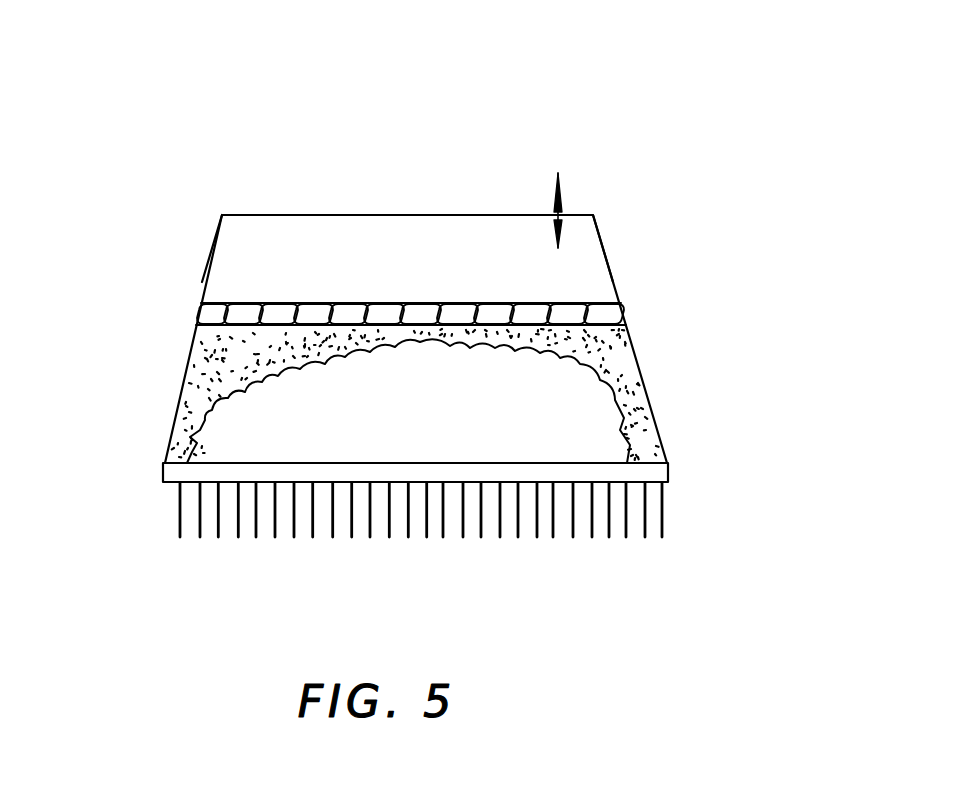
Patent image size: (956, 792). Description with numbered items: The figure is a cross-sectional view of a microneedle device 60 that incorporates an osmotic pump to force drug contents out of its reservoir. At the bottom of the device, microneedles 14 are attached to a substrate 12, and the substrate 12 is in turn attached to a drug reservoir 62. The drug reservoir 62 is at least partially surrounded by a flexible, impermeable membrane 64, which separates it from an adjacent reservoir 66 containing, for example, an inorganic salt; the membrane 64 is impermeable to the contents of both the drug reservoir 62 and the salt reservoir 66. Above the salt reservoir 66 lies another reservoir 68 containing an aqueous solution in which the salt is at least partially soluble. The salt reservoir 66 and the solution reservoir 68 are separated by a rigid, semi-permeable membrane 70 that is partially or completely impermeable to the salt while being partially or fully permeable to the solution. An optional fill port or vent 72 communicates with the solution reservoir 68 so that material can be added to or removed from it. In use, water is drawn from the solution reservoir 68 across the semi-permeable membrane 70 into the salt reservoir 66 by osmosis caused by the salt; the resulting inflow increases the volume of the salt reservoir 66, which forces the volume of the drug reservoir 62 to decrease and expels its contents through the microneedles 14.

The substrate 12 is at (178, 478).
The microneedles 14 is at (667, 512).
The microneedle device 60 is at (402, 121).
The drug reservoir 62 is at (572, 427).
The flexible impermeable membrane 64 is at (193, 437).
The salt reservoir 66 is at (203, 360).
The solution reservoir 68 is at (248, 173).
The rigid semi-permeable membrane 70 is at (622, 318).
The fill port or vent 72 is at (565, 207).